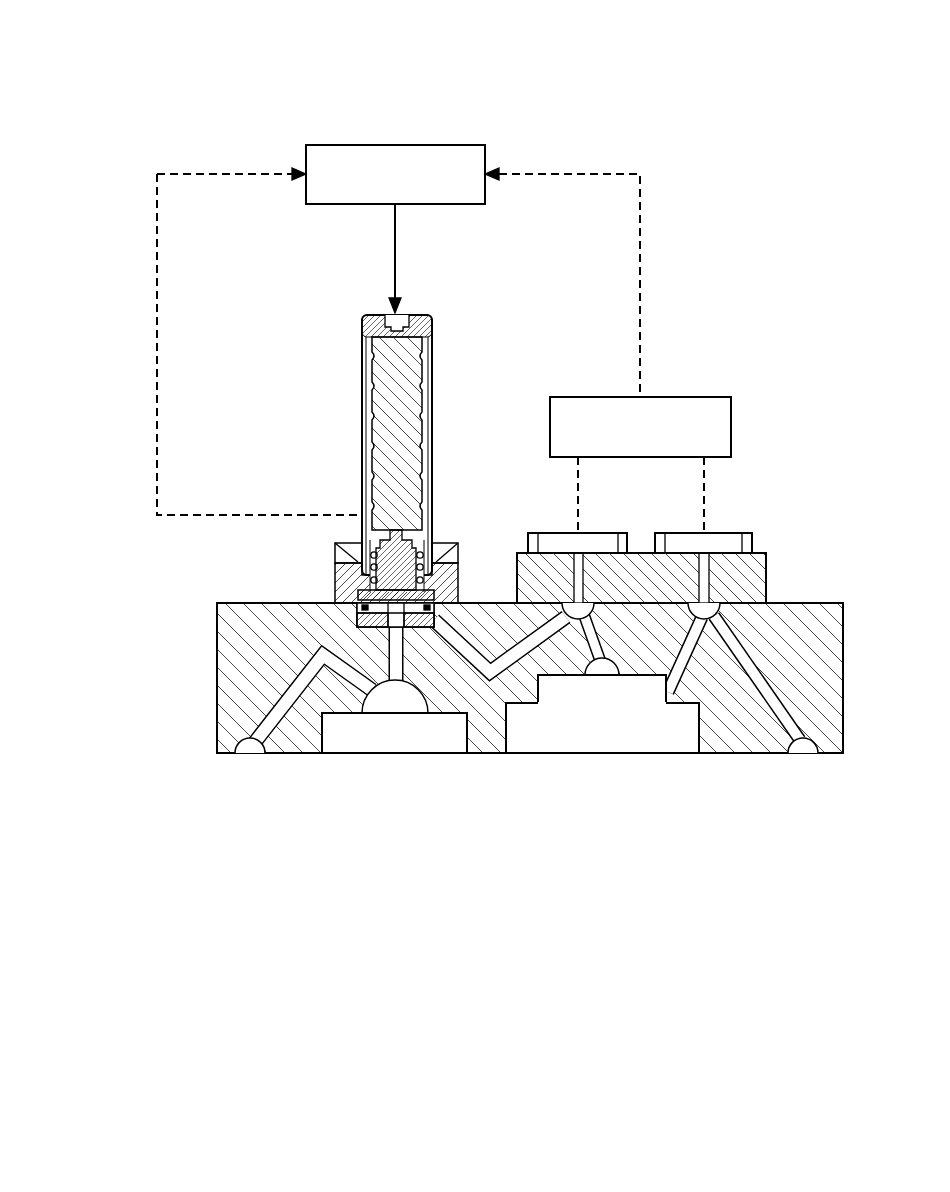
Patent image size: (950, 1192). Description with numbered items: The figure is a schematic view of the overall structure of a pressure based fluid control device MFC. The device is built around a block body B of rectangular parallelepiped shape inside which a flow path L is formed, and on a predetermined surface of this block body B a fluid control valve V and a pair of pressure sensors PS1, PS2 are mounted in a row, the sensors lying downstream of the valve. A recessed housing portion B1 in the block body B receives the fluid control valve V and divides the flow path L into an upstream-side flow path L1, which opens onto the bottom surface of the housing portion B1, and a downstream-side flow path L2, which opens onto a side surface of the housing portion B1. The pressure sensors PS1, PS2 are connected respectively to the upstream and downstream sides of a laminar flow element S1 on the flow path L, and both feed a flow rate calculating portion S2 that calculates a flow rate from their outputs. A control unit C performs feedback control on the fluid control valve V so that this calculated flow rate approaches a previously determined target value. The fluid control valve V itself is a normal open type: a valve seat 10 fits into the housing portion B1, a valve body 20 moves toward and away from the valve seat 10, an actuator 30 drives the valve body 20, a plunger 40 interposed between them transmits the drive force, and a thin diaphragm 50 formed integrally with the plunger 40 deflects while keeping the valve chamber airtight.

The fluid control device MFC is at (138, 143).
The control unit C is at (396, 145).
The fluid control valve V is at (394, 431).
The actuator 30 is at (425, 380).
The flow rate calculating portion S2 is at (731, 428).
The plunger 40 is at (360, 562).
The pressure sensor PS1 is at (540, 532).
The pressure sensor PS2 is at (735, 532).
The diaphragm 50 is at (432, 570).
The valve body 20 is at (446, 590).
The housing portion B1 is at (370, 636).
The valve seat 10 is at (358, 618).
The block body B is at (530, 651).
The upstream-side flow path L1 is at (398, 702).
The downstream-side flow path L2 is at (487, 678).
The flow path L is at (495, 797).
The laminar flow element S1 is at (603, 755).